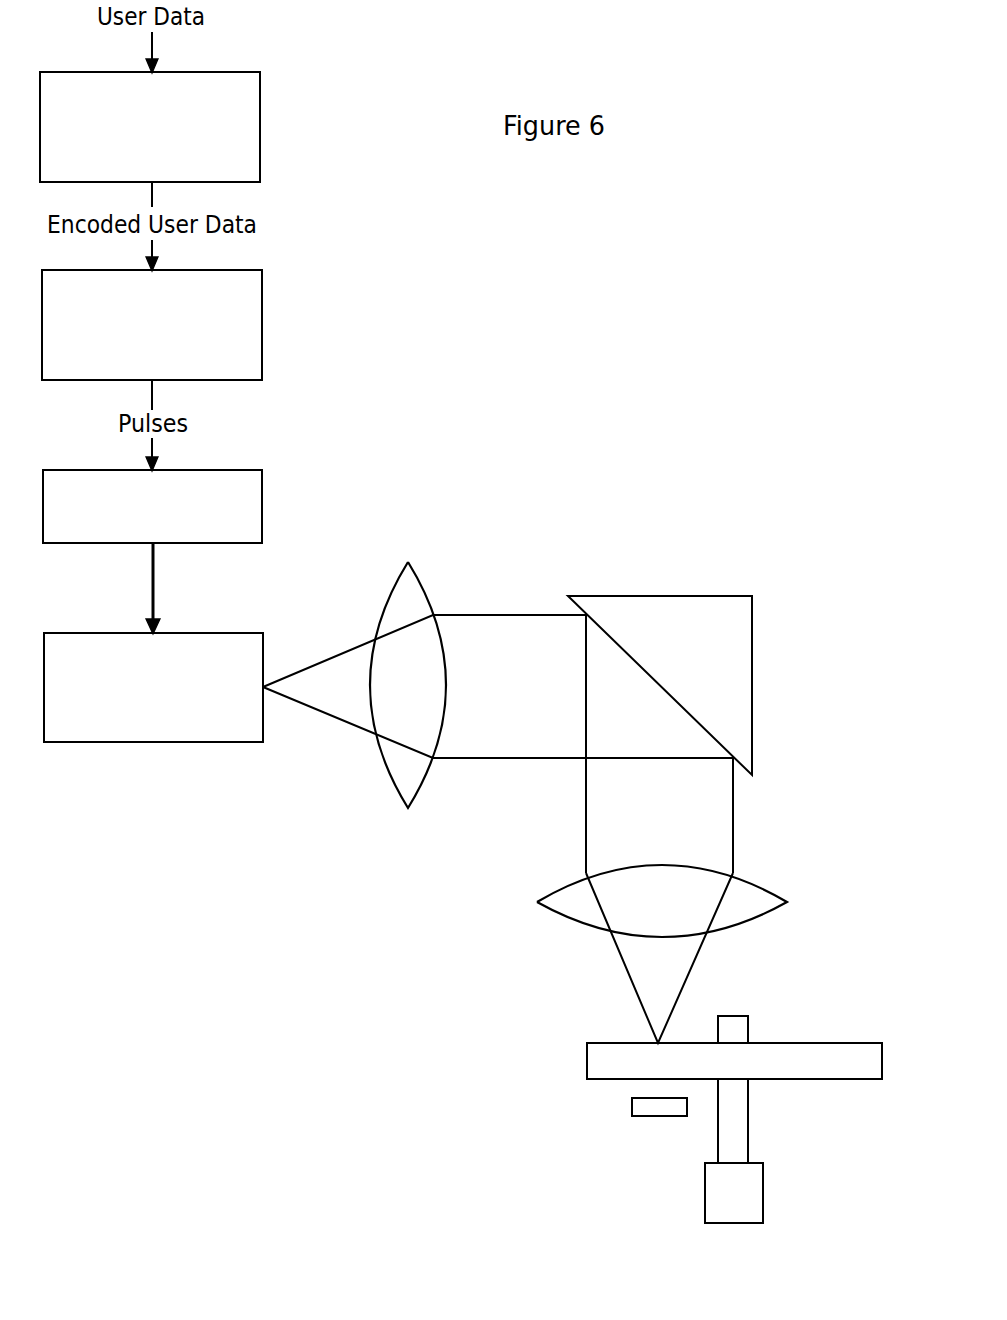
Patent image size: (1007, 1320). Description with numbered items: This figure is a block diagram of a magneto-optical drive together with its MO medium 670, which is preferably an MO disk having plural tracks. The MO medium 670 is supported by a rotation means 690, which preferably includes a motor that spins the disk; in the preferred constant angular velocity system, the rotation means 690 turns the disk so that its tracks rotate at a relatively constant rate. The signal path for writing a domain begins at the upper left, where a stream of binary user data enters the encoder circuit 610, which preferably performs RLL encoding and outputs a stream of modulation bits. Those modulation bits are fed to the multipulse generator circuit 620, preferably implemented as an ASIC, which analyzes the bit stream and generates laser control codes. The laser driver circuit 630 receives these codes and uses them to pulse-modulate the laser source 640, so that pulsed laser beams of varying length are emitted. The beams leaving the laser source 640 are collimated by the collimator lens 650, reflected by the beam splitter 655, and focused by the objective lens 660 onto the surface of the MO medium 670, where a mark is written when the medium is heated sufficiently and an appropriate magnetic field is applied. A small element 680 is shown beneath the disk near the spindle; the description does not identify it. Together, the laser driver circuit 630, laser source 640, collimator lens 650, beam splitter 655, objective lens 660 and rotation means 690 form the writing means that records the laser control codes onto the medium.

The encoder circuit 610 is at (261, 127).
The multipulse generator circuit 620 is at (263, 328).
The laser driver circuit 630 is at (263, 505).
The laser source 640 is at (158, 742).
The collimator lens 650 is at (409, 563).
The beam splitter 655 is at (752, 686).
The objective lens 660 is at (788, 900).
The MO medium 670 is at (587, 1063).
The read head 680 is at (631, 1104).
The rotation means 690 is at (705, 1195).